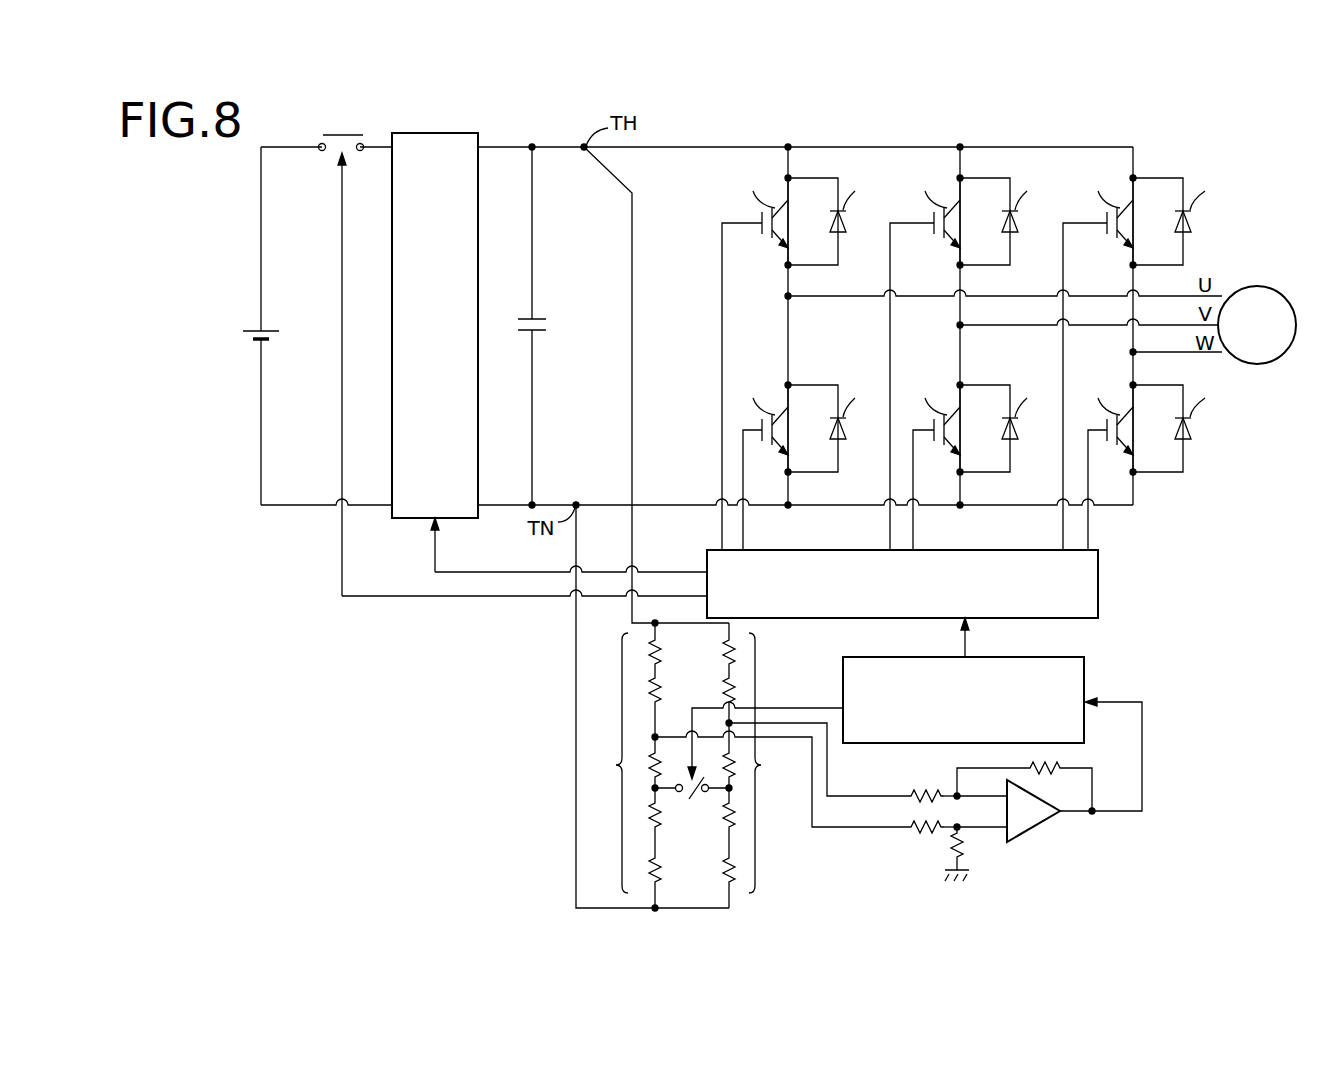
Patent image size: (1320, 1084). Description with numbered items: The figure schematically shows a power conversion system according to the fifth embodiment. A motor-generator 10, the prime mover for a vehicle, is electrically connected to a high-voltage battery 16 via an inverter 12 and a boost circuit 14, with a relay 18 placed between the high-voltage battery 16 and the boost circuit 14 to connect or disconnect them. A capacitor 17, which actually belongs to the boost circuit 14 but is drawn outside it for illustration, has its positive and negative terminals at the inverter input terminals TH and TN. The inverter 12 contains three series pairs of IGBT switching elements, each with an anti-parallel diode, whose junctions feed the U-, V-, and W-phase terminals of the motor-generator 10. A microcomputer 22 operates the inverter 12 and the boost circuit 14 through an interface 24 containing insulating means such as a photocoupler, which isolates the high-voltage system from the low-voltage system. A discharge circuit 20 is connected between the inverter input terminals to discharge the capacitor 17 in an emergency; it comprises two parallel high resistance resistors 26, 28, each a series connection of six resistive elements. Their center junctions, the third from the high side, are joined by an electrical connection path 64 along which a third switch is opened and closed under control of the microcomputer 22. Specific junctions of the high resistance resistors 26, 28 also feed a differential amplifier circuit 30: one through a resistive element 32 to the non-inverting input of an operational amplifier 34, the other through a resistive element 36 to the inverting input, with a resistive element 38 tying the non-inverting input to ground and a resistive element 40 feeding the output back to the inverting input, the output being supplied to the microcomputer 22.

The motor-generator 10 is at (1262, 289).
The inverter 12 is at (1174, 152).
The boost circuit 14 is at (470, 132).
The high-voltage battery 16 is at (268, 330).
The capacitor 17 is at (534, 318).
The relay 18 is at (336, 134).
The discharge circuit 20 is at (713, 529).
The microcomputer 22 is at (1085, 665).
The interface 24 is at (1100, 577).
The high resistance resistor 26 is at (605, 763).
The high resistance resistor 28 is at (771, 763).
The differential amplifier circuit 30 is at (1023, 795).
The resistive element 32 is at (925, 830).
The operational amplifier 34 is at (1039, 826).
The resistive element 36 is at (925, 795).
The resistive element 38 is at (961, 849).
The resistive element 40 is at (1052, 771).
The electrical connection path 64 is at (665, 794).